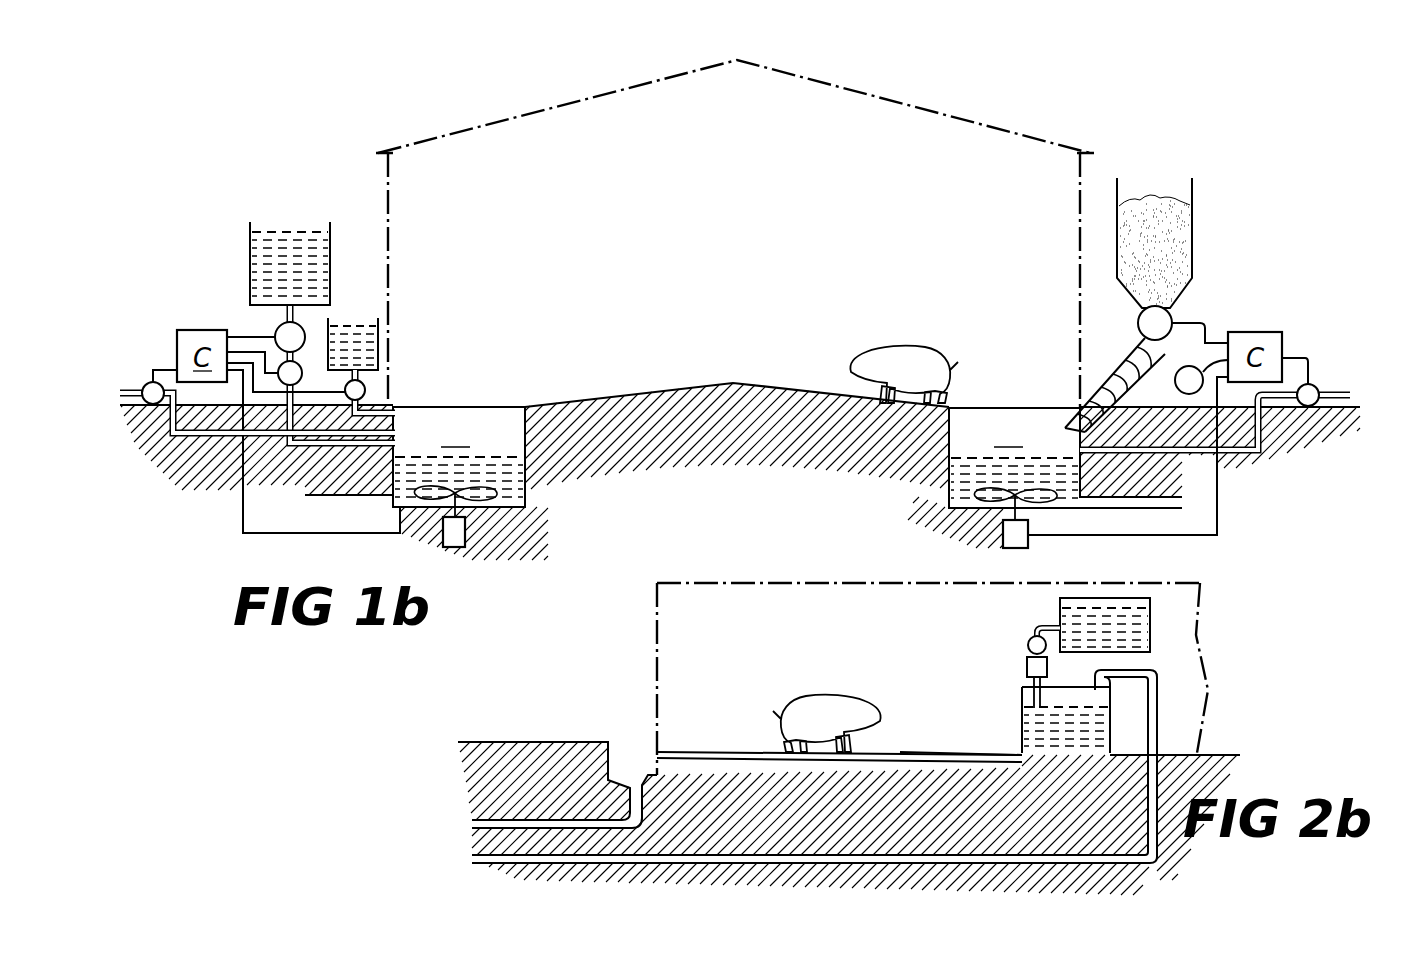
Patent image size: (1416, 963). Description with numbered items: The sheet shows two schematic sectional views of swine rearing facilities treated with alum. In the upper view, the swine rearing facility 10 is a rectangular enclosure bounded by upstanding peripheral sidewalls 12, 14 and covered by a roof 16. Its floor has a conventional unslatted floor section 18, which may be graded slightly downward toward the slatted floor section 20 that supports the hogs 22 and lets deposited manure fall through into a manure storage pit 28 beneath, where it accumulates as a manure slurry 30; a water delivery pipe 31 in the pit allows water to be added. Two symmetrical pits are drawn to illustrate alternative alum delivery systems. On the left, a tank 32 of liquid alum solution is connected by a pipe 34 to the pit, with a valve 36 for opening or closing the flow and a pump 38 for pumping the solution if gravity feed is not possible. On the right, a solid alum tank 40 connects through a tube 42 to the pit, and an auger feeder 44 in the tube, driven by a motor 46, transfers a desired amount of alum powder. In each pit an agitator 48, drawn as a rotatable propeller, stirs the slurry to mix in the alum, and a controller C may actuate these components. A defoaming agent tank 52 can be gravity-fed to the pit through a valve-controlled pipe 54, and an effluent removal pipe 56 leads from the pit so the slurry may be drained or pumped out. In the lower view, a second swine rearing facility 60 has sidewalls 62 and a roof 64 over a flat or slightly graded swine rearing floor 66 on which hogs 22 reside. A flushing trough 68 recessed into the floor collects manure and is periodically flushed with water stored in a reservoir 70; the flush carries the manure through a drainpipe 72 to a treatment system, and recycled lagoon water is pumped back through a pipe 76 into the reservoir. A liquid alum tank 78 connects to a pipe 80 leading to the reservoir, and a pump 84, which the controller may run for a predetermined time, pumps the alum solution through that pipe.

In FIG. 1B, the swine rearing facility 10 is at (278, 111).
In FIG. 1B, the sidewall 12 is at (1083, 185).
In FIG. 1B, the sidewall 14 is at (386, 210).
In FIG. 1B, the roof 16 is at (508, 115).
In FIG. 1B, the unslatted floor section 18 is at (675, 388).
In FIG. 1B, the slatted floor section 20 is at (495, 407).
In FIG. 1B, the hog 22 is at (900, 347).
In FIG. 2B, the hog 22 is at (823, 698).
In FIG. 1B, the manure storage pit 28 is at (733, 435).
In FIG. 1B, the manure slurry 30 is at (527, 480).
In FIG. 1B, the water delivery pipe 31 is at (212, 437).
In FIG. 1B, the tank 32 is at (250, 228).
In FIG. 1B, the pipe 34 is at (348, 452).
In FIG. 1B, the valve 36 is at (303, 352).
In FIG. 1B, the pump 38 is at (276, 330).
In FIG. 1B, the solid alum source or tank 40 is at (1192, 203).
In FIG. 1B, the tube 42 is at (1143, 372).
In FIG. 1B, the auger feeder 44 is at (1100, 395).
In FIG. 1B, the motor 46 is at (1190, 365).
In FIG. 1B, the agitator 48 is at (480, 497).
In FIG. 1B, the tank 52 is at (378, 318).
In FIG. 1B, the valve-controlled pipe 54 is at (397, 412).
In FIG. 1B, the effluent removal pipe 56 is at (318, 506).
In FIG. 2B, the swine rearing facility 60 is at (725, 574).
In FIG. 2B, the sidewall 62 is at (655, 651).
In FIG. 2B, the roof 64 is at (872, 582).
In FIG. 2B, the swine rearing floor 66 is at (897, 752).
In FIG. 2B, the flushing trough 68 is at (745, 757).
In FIG. 2B, the reservoir 70 is at (1022, 742).
In FIG. 2B, the drainpipe 72 is at (472, 826).
In FIG. 2B, the pipe 76 is at (472, 858).
In FIG. 2B, the tank 78 is at (1150, 637).
In FIG. 2B, the pipe 80 is at (1032, 706).
In FIG. 2B, the pump 84 is at (1026, 665).